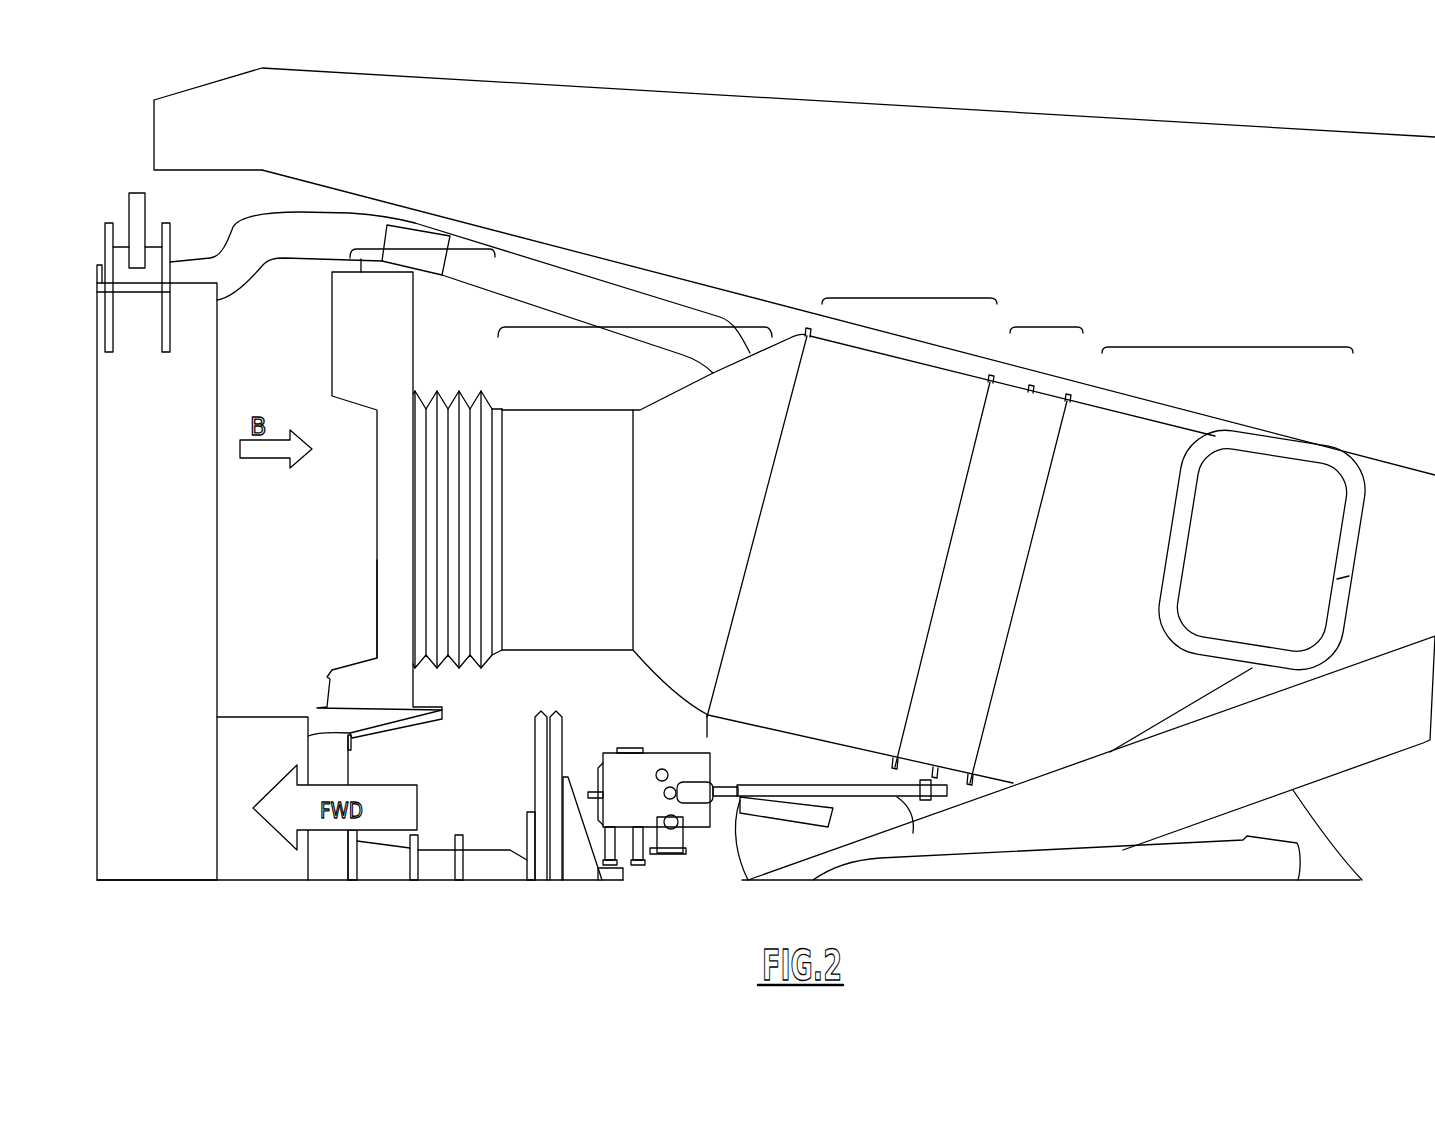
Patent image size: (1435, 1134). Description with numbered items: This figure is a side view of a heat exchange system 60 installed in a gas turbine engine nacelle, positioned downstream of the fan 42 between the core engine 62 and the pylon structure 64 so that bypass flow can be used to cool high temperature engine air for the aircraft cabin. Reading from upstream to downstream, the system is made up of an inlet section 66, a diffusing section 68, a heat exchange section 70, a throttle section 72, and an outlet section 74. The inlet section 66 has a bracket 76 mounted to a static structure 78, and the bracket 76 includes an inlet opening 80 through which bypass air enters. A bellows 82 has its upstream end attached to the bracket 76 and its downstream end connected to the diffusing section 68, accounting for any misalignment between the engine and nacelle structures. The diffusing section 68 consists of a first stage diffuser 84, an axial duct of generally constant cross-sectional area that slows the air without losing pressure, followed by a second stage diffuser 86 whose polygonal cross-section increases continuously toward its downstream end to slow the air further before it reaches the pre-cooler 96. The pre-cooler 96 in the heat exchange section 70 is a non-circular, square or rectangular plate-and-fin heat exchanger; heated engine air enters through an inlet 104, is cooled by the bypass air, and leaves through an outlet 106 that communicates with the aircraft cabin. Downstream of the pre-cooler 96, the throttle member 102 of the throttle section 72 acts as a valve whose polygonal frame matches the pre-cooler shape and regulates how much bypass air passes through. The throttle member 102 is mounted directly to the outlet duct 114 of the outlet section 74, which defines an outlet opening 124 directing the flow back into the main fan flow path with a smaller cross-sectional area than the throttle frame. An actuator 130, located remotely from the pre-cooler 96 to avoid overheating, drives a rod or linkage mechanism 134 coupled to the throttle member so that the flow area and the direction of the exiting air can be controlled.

The fan 42 is at (217, 341).
The heat exchange system 60 is at (618, 708).
The core engine 62 is at (433, 847).
The pylon structure 64 is at (794, 271).
The inlet section 66 is at (427, 248).
The diffusing section 68 is at (633, 328).
The heat exchange section 70 is at (917, 298).
The throttle section 72 is at (1047, 327).
The outlet section 74 is at (1227, 347).
The bracket 76 is at (347, 358).
The static structure 78 is at (390, 727).
The inlet opening 80 is at (377, 608).
The bellows 82 is at (457, 677).
The first stage diffuser 84 is at (550, 630).
The second stage diffuser 86 is at (683, 700).
The pre-cooler 96 is at (873, 549).
The throttle member 102 is at (977, 732).
The inlet 104 is at (708, 737).
The outlet 106 is at (963, 348).
The outlet duct 114 is at (1185, 713).
The outlet opening 124 is at (1353, 575).
The actuator 130 is at (693, 827).
The rod or linkage mechanism 134 is at (897, 797).